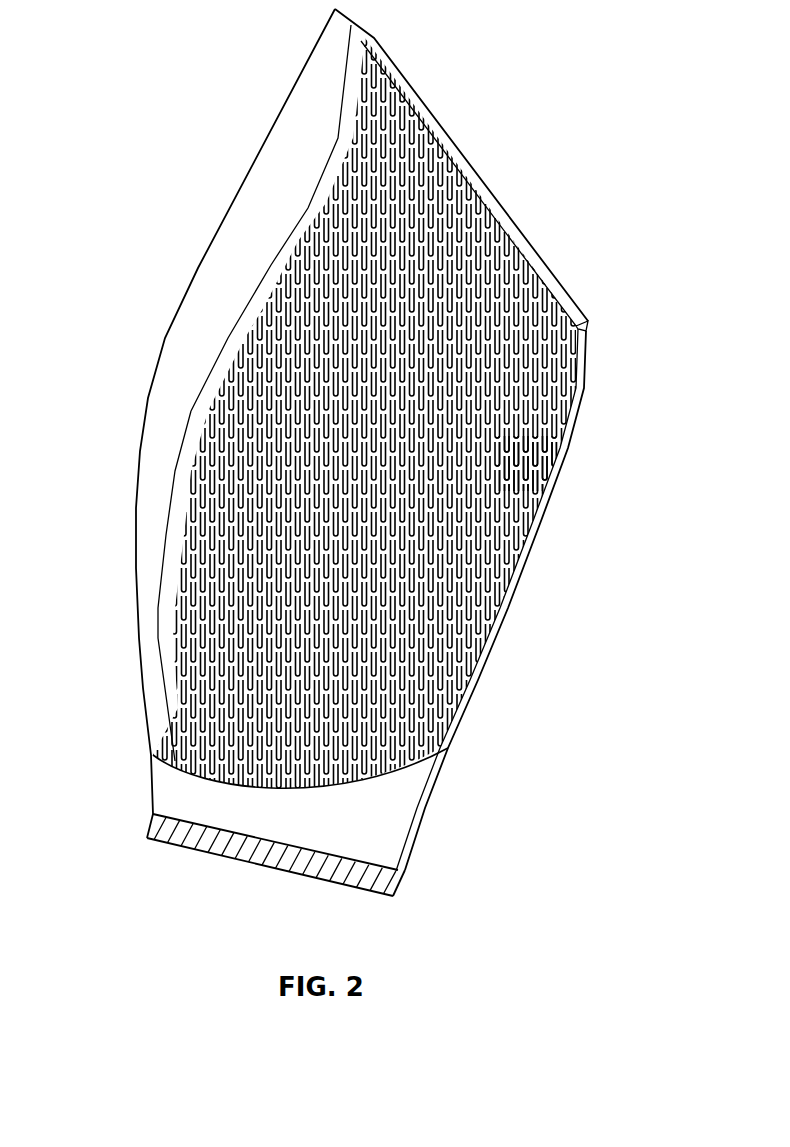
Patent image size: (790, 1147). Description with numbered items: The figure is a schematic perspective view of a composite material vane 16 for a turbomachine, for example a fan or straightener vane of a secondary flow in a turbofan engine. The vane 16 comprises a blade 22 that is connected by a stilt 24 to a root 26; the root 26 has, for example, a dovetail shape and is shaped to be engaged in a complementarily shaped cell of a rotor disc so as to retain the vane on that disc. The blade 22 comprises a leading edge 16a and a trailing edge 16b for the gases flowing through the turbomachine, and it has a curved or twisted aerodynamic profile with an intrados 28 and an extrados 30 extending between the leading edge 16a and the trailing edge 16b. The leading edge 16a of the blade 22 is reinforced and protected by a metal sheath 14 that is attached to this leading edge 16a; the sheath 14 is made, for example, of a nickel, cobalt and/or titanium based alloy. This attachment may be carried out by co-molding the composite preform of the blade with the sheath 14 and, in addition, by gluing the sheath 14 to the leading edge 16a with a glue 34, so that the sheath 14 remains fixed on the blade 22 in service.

The metal sheath 14 is at (147, 470).
The vane 16 is at (617, 335).
The leading edge 16a is at (141, 393).
The trailing edge 16b is at (491, 624).
The blade 22 is at (497, 248).
The stilt 24 is at (390, 785).
The root 26 is at (398, 858).
The intrados 28 is at (512, 458).
The extrados 30 is at (548, 268).
The glue 34 is at (217, 337).